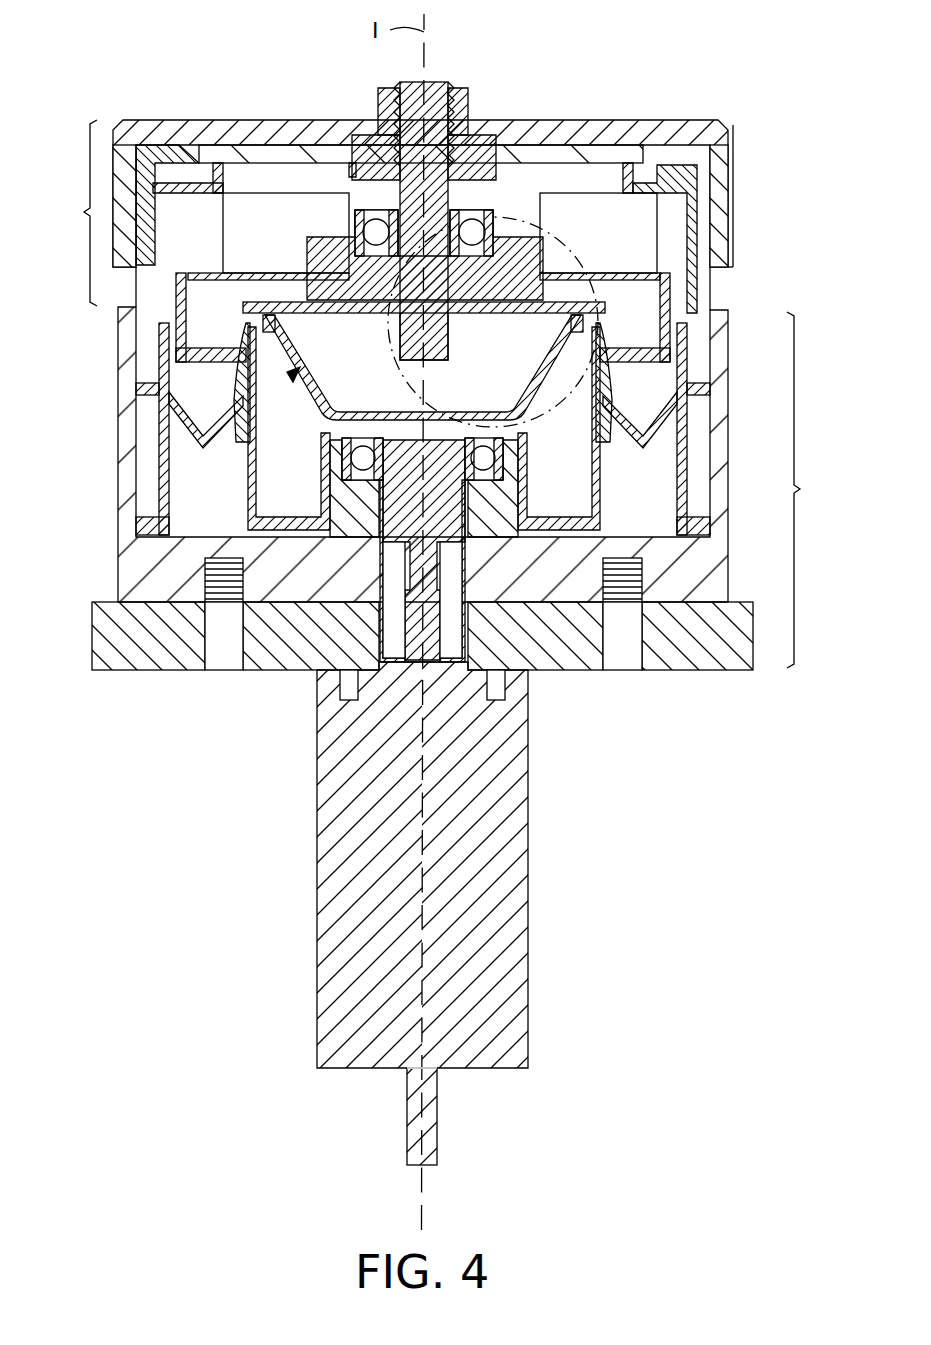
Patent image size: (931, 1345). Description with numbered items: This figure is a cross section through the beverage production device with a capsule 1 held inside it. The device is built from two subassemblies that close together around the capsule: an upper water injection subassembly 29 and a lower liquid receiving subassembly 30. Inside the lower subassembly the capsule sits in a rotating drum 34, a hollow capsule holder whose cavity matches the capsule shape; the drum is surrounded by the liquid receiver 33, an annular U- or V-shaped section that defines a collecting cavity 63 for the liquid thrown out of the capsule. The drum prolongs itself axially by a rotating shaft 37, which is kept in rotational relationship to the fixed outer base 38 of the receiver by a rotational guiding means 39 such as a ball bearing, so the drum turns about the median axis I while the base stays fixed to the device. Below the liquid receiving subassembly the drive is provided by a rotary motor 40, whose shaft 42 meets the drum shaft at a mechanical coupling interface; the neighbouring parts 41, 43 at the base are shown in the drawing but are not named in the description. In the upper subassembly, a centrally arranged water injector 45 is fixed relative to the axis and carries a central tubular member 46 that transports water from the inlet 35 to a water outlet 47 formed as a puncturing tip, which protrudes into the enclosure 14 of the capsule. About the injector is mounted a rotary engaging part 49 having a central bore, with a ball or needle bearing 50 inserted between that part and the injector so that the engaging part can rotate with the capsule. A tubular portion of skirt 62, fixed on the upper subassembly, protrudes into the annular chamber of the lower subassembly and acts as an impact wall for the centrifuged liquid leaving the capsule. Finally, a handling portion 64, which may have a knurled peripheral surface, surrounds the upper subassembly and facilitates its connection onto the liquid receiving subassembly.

The capsule 1 is at (292, 376).
The enclosure 14 is at (335, 404).
The water injection subassembly 29 is at (73, 213).
The liquid receiving subassembly 30 is at (810, 490).
The liquid receiver 33 is at (690, 356).
The rotating drum 34 is at (248, 356).
The inlet 35 is at (425, 80).
The rotating shaft 37 is at (455, 494).
The outer base 38 is at (720, 580).
The rotational guiding means 39 is at (350, 456).
The rotary motor 40 is at (522, 764).
The bolt hole 41 is at (224, 658).
The shaft of the motor 42 is at (418, 657).
The bolt hole 43 is at (688, 662).
The water injector 45 is at (478, 80).
The central tubular member 46 is at (462, 186).
The water outlet 47 is at (422, 345).
The rotary engaging part 49 is at (553, 240).
The ball or needle bearing 50 is at (362, 230).
The tubular portion of skirt 62 is at (690, 285).
The collecting cavity 63 is at (199, 402).
The handling portion 64 is at (727, 119).